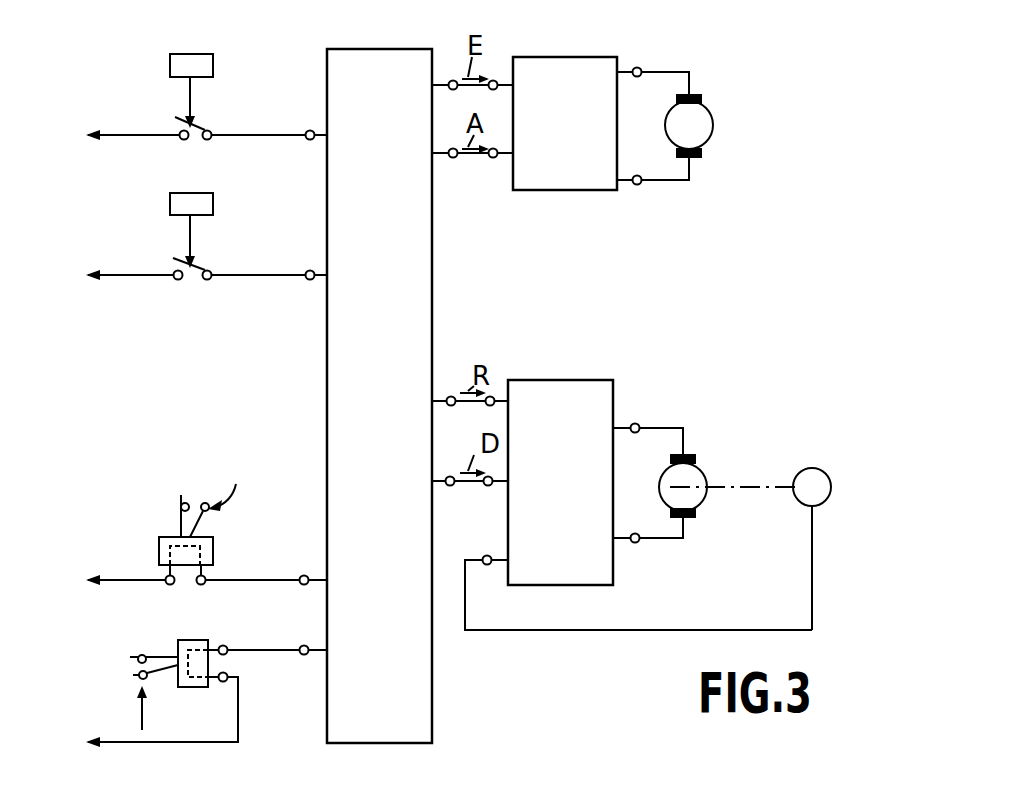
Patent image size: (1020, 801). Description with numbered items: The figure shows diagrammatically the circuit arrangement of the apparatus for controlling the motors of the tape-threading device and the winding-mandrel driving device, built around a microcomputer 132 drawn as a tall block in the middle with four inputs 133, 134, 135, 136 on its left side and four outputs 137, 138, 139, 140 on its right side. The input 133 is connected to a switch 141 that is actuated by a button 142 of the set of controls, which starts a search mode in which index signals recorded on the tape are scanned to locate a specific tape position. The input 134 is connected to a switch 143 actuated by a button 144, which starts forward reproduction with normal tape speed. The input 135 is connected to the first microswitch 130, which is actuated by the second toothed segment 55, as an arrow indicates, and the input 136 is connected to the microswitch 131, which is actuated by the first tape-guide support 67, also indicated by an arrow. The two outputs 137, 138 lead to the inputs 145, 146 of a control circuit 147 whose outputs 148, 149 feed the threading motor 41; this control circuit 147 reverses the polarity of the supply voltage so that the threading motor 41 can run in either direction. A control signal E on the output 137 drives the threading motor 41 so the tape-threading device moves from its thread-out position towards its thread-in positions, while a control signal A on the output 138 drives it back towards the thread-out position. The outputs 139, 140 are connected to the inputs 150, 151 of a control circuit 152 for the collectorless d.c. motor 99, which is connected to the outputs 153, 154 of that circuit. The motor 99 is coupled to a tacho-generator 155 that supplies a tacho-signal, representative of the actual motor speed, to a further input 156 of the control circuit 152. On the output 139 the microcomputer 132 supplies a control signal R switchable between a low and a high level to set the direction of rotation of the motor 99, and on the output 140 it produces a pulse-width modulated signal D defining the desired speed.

The threading motor 41 is at (705, 128).
The second toothed segment 55 is at (220, 445).
The first tape-guide support 67 is at (142, 713).
The collectorless d.c. motor 99 is at (700, 478).
The first microswitch 130 is at (159, 553).
The microswitch 131 is at (146, 593).
The microcomputer 132 is at (338, 356).
The input 133 is at (308, 130).
The input 134 is at (308, 268).
The input 135 is at (304, 572).
The input 136 is at (300, 642).
The output 137 is at (452, 80).
The output 138 is at (452, 158).
The output 139 is at (451, 395).
The output 140 is at (450, 475).
The switch 141 is at (200, 127).
The button 142 is at (170, 63).
The switch 143 is at (200, 270).
The button 144 is at (170, 205).
The input 145 is at (495, 80).
The input 146 is at (494, 158).
The control circuit 147 is at (560, 68).
The output 148 is at (640, 66).
The output 149 is at (640, 186).
The input 150 is at (492, 395).
The input 151 is at (488, 487).
The control circuit 152 is at (560, 385).
The output 153 is at (637, 423).
The output 154 is at (637, 544).
The tacho-generator 155 is at (808, 475).
The further input 156 is at (488, 566).